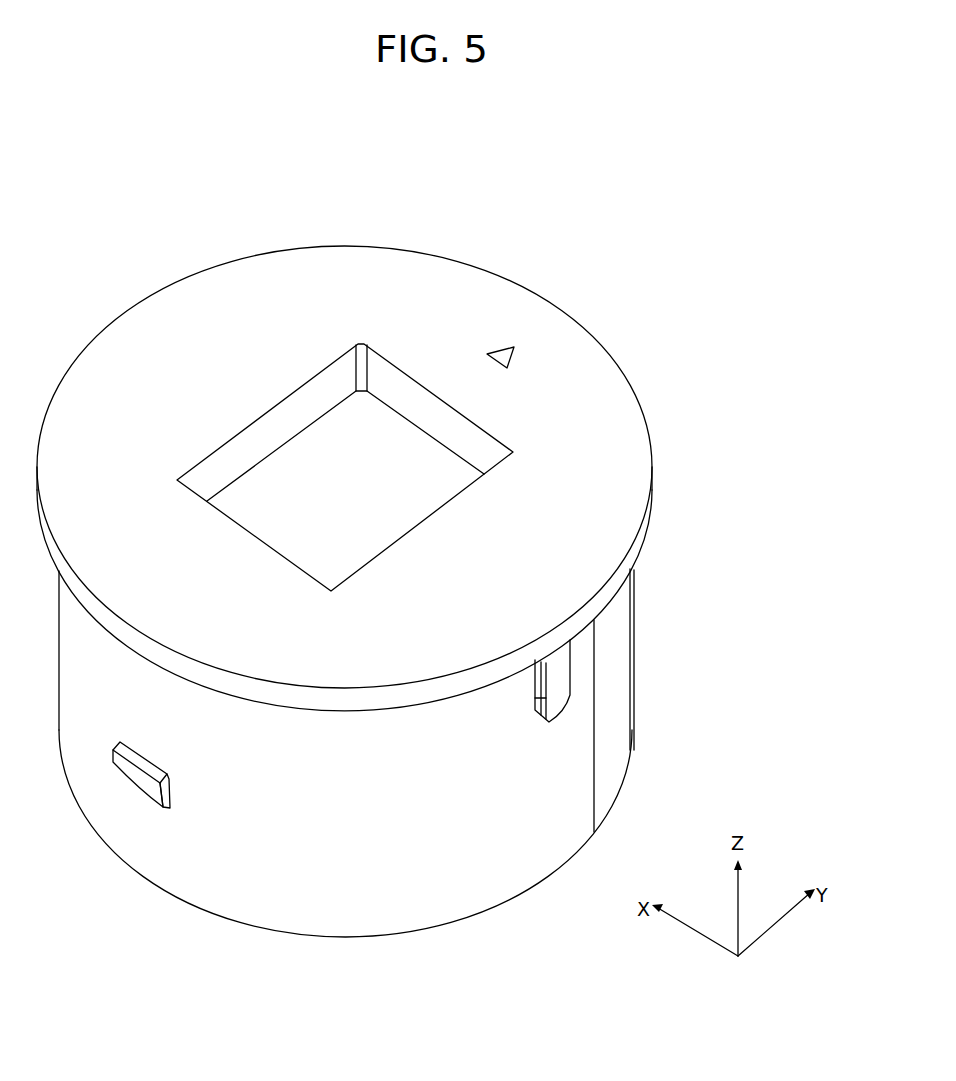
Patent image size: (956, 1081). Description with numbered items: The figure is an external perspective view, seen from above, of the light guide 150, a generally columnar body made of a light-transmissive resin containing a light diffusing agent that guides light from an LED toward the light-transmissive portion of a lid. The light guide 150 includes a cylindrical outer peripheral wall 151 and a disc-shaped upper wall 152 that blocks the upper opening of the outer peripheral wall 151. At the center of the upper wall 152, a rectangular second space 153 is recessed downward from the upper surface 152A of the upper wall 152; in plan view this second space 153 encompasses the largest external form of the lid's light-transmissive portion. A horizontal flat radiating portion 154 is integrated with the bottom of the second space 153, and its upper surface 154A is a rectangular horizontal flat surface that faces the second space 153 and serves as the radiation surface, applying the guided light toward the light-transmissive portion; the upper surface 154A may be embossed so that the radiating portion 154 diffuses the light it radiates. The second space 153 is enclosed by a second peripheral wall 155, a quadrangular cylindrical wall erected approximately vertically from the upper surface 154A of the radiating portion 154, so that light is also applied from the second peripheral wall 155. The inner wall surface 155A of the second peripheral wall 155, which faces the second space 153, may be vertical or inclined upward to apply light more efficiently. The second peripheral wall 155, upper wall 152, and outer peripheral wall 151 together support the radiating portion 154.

The light guide 150 is at (780, 177).
The outer peripheral wall 151 is at (636, 650).
The upper wall 152 is at (638, 393).
The upper surface 152A is at (581, 356).
The second space 153 is at (382, 386).
The radiating portion 154 is at (432, 488).
The upper surface of the radiating portion 154A is at (501, 467).
The second peripheral wall 155 is at (287, 421).
The inner wall surface 155A is at (345, 338).